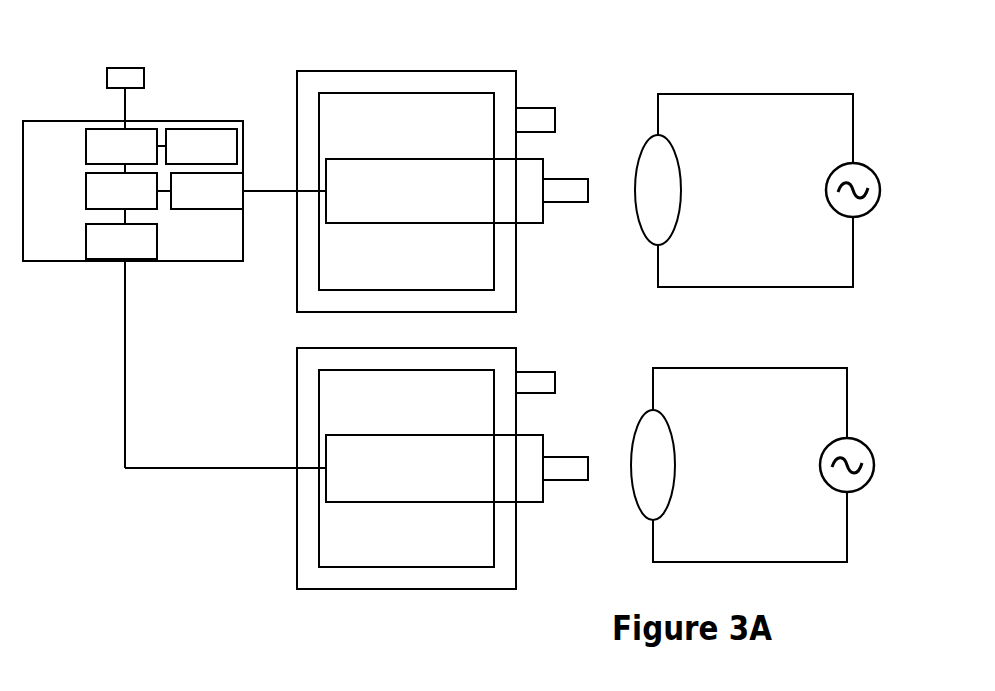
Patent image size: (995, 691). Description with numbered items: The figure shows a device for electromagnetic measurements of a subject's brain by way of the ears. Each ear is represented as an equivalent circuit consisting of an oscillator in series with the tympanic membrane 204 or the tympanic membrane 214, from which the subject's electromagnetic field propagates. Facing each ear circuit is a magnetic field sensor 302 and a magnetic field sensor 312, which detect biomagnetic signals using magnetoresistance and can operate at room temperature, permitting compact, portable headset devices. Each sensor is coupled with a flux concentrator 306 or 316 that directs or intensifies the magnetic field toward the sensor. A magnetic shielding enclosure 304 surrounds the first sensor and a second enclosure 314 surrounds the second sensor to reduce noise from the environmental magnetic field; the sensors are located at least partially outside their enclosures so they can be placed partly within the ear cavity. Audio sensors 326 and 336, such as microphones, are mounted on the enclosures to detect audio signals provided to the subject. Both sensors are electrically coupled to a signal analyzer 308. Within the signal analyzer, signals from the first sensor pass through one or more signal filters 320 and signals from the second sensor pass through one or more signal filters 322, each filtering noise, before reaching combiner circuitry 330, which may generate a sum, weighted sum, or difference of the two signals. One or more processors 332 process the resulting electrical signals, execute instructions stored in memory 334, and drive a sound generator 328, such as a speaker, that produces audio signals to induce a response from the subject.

The signal analyzer 308 is at (70, 155).
The processors 332 is at (140, 157).
The memory 334 is at (220, 157).
The combiner circuitry 330 is at (140, 202).
The signal filters 320 is at (226, 202).
The signal filters 322 is at (140, 253).
The sound generator 328 is at (127, 77).
The enclosure 304 is at (425, 77).
The magnetic field sensor 302 is at (454, 202).
The flux concentrator 306 is at (572, 183).
The audio sensor 326 is at (537, 117).
The enclosure 314 is at (425, 583).
The magnetic field sensor 312 is at (454, 481).
The flux concentrator 316 is at (572, 485).
The audio sensor 336 is at (535, 380).
The tympanic membrane 204 is at (657, 177).
The tympanic membrane 214 is at (653, 450).